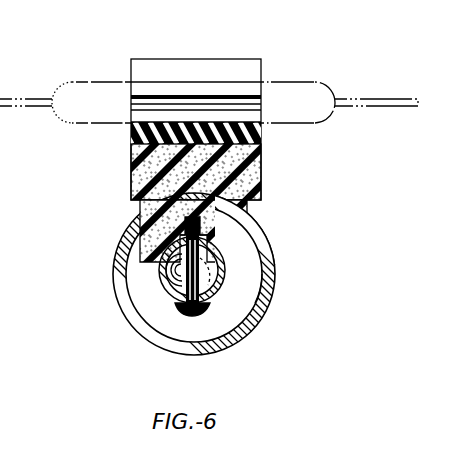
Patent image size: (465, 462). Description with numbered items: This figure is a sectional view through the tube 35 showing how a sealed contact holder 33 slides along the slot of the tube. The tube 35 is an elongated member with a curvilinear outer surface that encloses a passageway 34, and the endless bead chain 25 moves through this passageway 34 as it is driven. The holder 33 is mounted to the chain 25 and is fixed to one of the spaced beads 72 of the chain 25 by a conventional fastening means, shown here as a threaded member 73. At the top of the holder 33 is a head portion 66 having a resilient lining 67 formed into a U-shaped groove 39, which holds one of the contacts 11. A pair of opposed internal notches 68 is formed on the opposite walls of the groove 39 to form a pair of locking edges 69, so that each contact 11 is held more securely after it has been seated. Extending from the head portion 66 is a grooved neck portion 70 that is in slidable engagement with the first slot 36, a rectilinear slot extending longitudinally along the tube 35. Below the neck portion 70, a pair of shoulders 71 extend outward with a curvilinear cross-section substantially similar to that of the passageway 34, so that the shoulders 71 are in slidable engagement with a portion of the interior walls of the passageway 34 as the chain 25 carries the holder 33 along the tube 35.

The contact 11 is at (84, 77).
The holder 33 is at (268, 71).
The locking edges 69 is at (222, 85).
The internal notches 68 is at (145, 98).
The resilient lining 67 is at (131, 133).
The U-shaped groove 39 is at (259, 117).
The head portion 66 is at (131, 165).
The first slot 36 is at (143, 215).
The neck portion 70 is at (230, 213).
The shoulders 71 is at (228, 243).
The tube 35 is at (114, 270).
The passageway 34 is at (254, 284).
The beads 72 is at (164, 288).
The endless bead chain 25 is at (211, 284).
The threaded member 73 is at (182, 320).